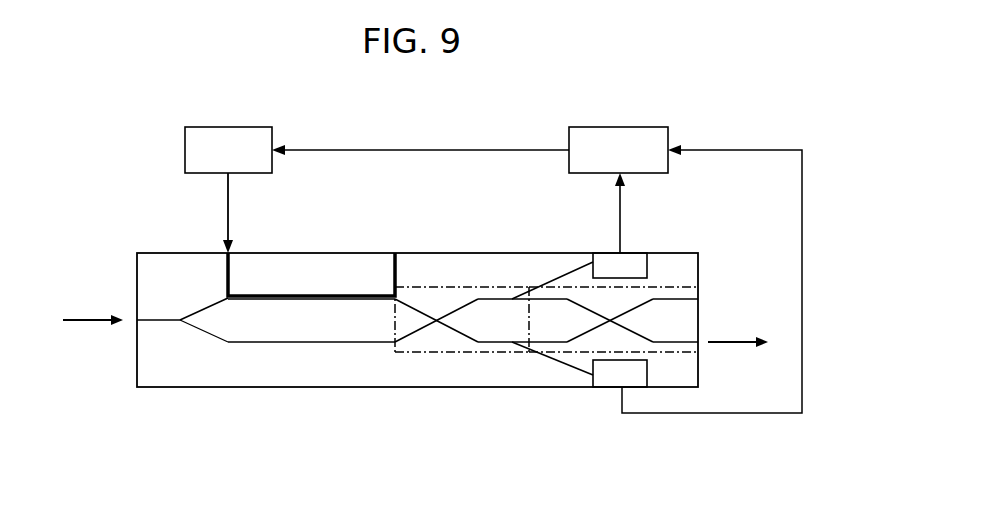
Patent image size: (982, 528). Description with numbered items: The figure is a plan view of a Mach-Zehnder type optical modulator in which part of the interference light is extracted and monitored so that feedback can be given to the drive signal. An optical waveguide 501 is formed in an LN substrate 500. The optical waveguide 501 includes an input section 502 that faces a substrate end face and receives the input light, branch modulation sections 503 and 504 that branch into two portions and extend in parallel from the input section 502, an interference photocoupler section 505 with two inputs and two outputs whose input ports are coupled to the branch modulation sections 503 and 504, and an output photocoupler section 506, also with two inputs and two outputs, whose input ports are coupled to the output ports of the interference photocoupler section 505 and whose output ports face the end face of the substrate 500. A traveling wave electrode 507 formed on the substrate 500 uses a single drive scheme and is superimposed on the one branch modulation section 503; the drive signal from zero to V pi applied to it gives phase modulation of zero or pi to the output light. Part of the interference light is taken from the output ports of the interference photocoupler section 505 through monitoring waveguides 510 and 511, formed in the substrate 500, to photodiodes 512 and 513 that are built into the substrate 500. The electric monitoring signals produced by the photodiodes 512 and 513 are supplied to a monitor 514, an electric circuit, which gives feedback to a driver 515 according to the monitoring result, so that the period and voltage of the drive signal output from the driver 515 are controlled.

The LN substrate 500 is at (313, 388).
The optical waveguide 501 is at (197, 348).
The input section 502 is at (158, 320).
The branch modulation section 503 is at (367, 296).
The branch modulation section 504 is at (273, 342).
The interference photocoupler section 505 is at (440, 353).
The output photocoupler section 506 is at (657, 353).
The traveling wave electrode 507 is at (310, 294).
The monitoring waveguide 510 is at (550, 284).
The monitoring waveguide 511 is at (548, 360).
The photodiode 512 is at (637, 253).
The photodiode 513 is at (603, 388).
The monitor 514 is at (626, 127).
The driver 515 is at (247, 127).